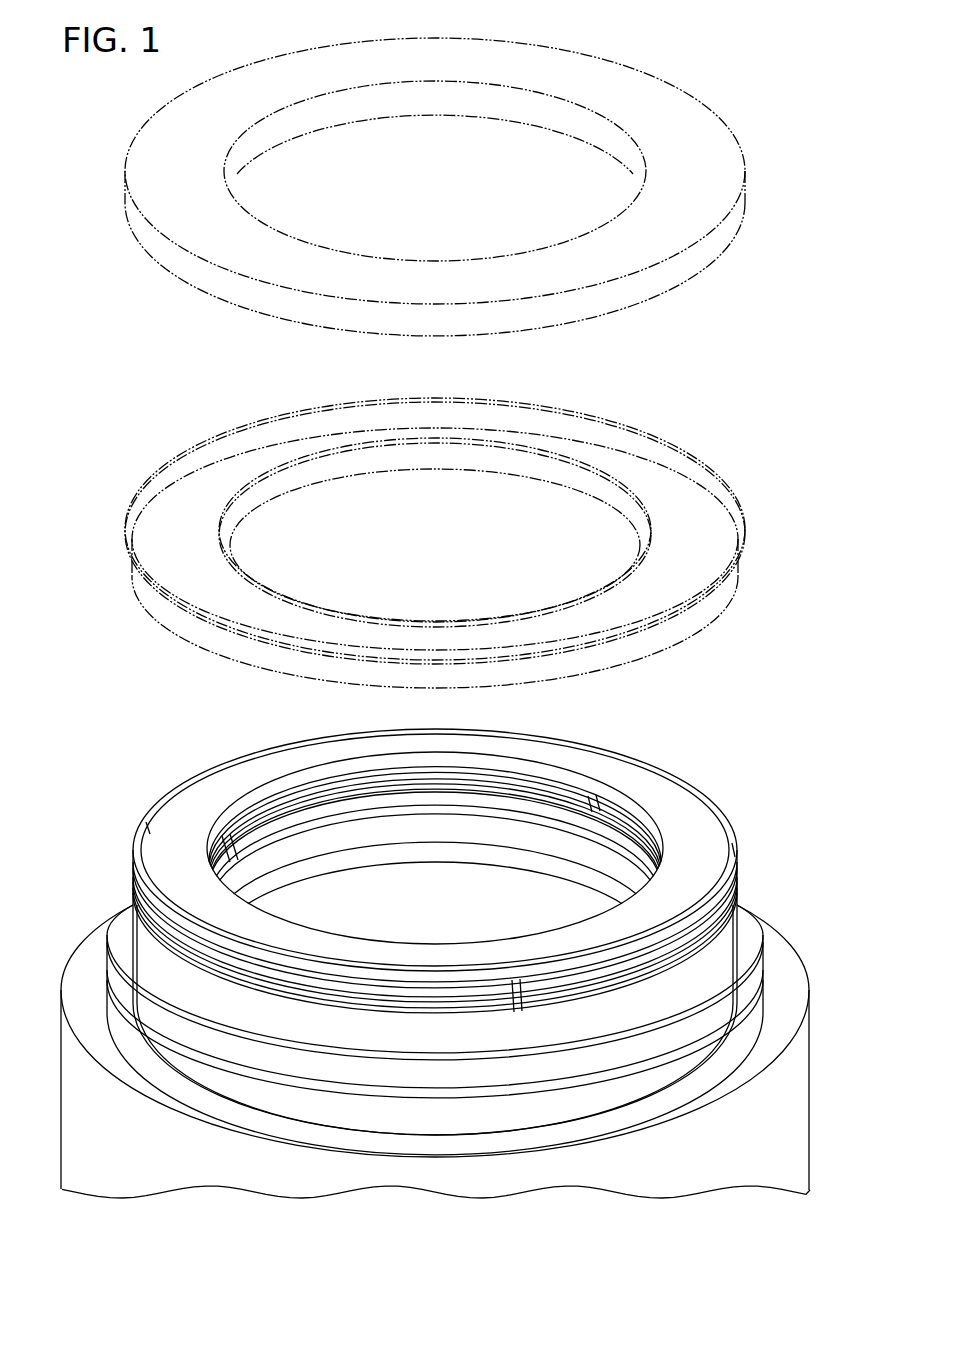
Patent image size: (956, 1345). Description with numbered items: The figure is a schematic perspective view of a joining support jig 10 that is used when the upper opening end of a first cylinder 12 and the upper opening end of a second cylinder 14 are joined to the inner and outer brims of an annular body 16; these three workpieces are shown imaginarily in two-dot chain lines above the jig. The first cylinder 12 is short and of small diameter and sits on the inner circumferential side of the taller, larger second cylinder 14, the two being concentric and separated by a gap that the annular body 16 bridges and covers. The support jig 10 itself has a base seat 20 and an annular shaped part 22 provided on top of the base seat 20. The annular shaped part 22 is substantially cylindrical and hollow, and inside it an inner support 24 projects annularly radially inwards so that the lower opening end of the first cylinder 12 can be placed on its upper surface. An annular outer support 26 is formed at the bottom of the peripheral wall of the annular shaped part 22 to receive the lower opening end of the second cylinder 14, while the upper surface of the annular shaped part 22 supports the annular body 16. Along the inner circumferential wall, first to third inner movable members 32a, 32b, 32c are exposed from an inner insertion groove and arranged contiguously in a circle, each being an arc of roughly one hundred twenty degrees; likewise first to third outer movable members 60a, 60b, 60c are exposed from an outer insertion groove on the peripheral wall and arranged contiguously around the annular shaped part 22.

The joining support jig 10 is at (87, 912).
The first cylinder 12 is at (645, 505).
The second cylinder 14 is at (677, 448).
The annular body 16 is at (697, 96).
The base seat 20 is at (738, 1178).
The annular shaped part 22 is at (663, 762).
The inner support 24 is at (495, 830).
The outer support 26 is at (733, 930).
The first inner movable member 32a is at (225, 862).
The second inner movable member 32b is at (235, 817).
The third inner movable member 32c is at (643, 825).
The first outer movable member 60a is at (473, 1010).
The second outer movable member 60b is at (148, 830).
The third outer movable member 60c is at (734, 849).